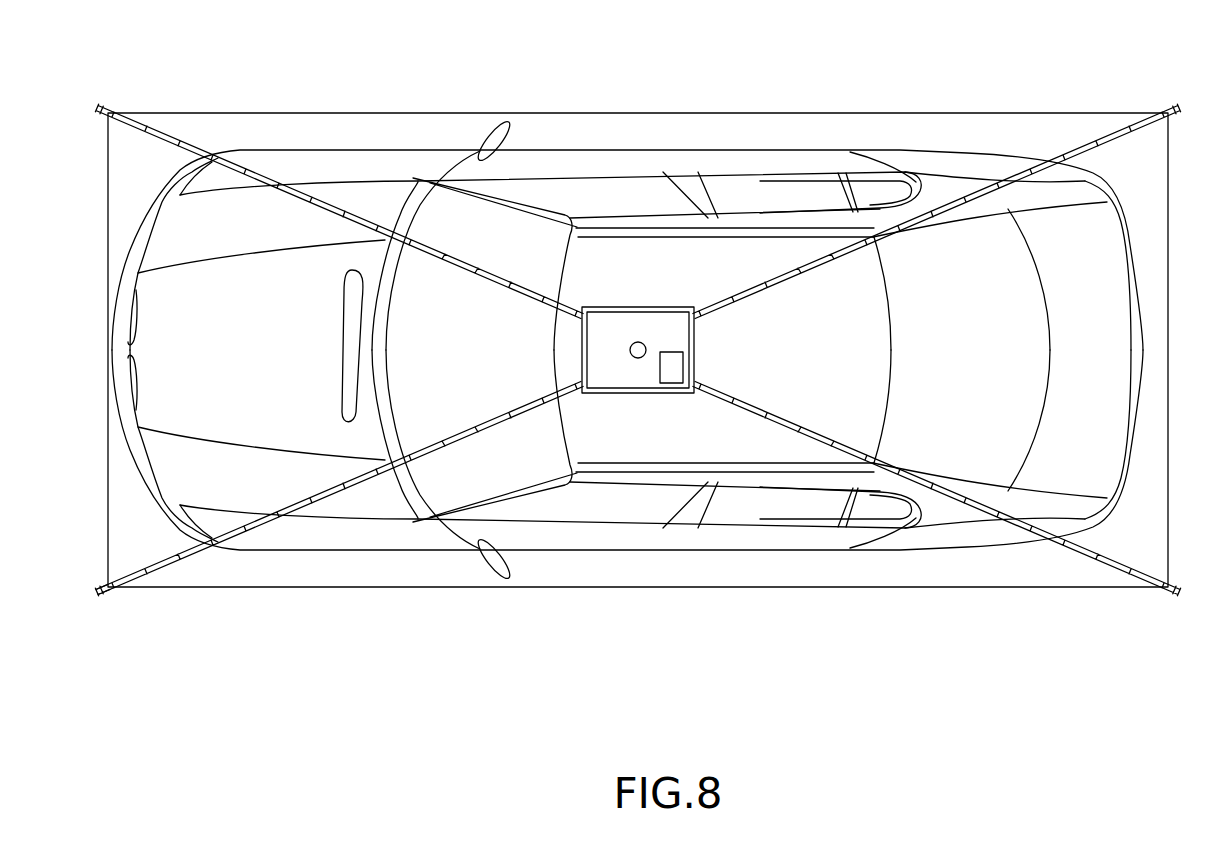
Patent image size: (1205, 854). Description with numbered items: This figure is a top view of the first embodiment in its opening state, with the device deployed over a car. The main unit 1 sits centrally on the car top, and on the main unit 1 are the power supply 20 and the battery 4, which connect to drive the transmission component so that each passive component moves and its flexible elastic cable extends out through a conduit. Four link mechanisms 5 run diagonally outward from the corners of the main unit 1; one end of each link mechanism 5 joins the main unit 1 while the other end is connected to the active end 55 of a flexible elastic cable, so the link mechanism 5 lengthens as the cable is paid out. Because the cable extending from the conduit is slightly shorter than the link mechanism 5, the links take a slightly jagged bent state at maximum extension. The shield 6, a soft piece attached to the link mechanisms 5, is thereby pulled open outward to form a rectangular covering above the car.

The main unit 1 is at (604, 327).
The power supply 20 is at (634, 343).
The battery 4 is at (673, 358).
The link mechanism 5 is at (310, 503).
The active end 55 is at (99, 596).
The shield 6 is at (862, 577).